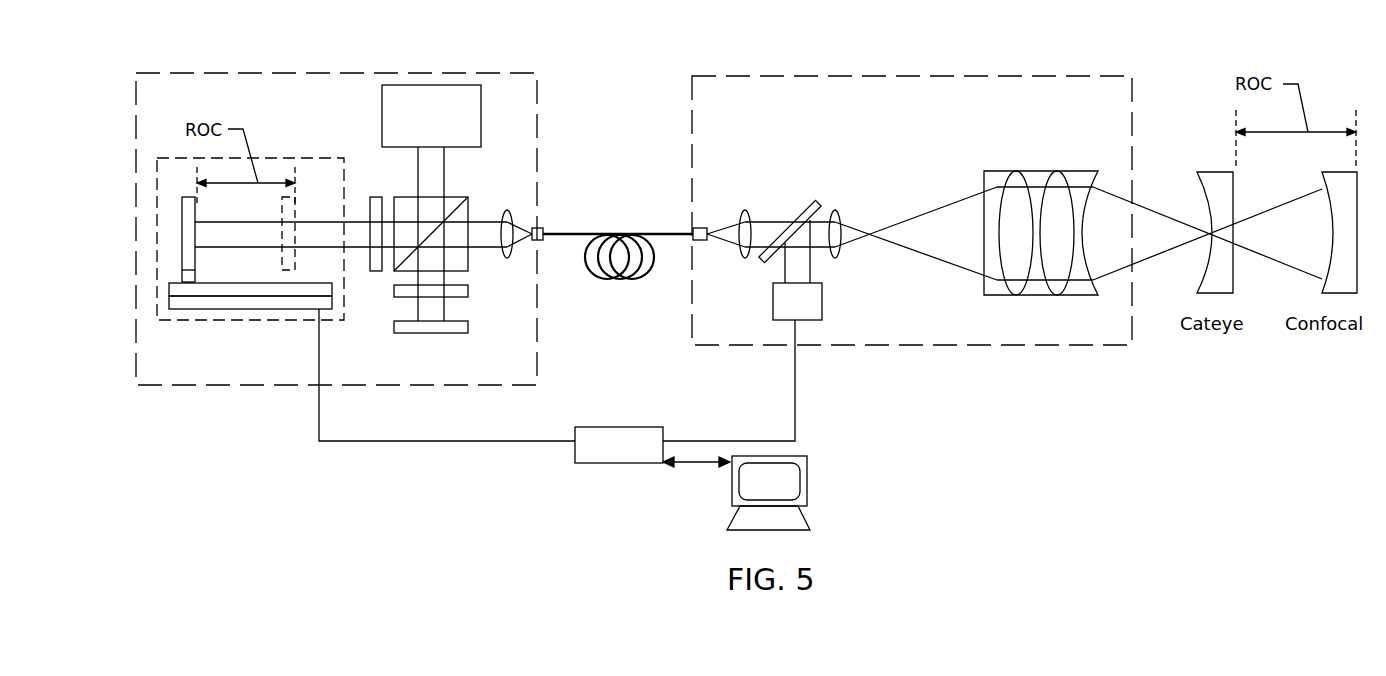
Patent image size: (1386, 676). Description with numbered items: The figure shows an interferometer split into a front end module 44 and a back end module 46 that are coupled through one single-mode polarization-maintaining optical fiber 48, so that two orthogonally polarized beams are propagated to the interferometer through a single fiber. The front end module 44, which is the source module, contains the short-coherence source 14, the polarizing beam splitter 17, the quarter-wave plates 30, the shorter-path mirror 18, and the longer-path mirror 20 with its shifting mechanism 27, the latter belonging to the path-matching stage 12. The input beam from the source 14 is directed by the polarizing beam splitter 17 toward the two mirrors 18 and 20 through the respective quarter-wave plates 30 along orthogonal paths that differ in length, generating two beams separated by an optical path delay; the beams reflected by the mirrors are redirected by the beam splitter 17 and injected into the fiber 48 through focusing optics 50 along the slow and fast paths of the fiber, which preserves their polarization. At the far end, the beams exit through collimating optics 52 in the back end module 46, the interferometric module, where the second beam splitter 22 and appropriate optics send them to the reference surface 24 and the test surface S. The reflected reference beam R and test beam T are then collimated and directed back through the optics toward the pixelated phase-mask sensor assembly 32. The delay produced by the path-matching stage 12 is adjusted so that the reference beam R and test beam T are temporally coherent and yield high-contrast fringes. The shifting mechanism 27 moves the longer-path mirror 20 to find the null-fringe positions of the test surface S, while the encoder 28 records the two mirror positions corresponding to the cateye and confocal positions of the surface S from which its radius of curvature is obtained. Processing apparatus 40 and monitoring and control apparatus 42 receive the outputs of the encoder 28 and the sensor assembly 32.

The path-matching stage 12 is at (252, 223).
The short-coherence source 14 is at (455, 116).
The polarizing beam splitter 17 is at (449, 216).
The shorter-path mirror 18 is at (418, 351).
The longer-path mirror 20 is at (262, 234).
The second beam splitter 22 is at (807, 218).
The reference surface 24 is at (1056, 233).
The shifting mechanism 27 is at (250, 279).
The encoder 28 is at (250, 320).
The quarter-wave plates 30 is at (413, 240).
The pixelated phase-mask sensor assembly 32 is at (822, 306).
The processing apparatus 40 is at (604, 462).
The monitoring and control apparatus 42 is at (790, 493).
The front end module 44 is at (354, 208).
The back end module 46 is at (912, 188).
The single-mode polarization-maintaining optical fiber 48 is at (619, 237).
The focusing optics 50 is at (541, 263).
The collimating optics 52 is at (770, 210).
The reference beam R is at (763, 269).
The test beam T is at (824, 275).
The test surface S is at (1239, 176).